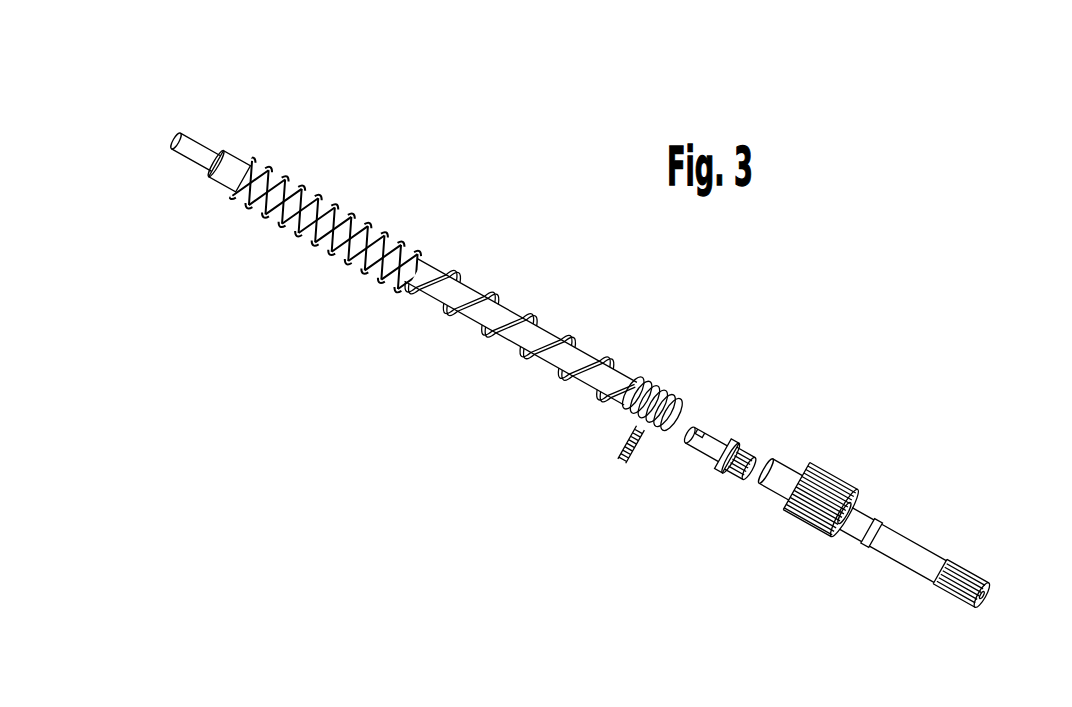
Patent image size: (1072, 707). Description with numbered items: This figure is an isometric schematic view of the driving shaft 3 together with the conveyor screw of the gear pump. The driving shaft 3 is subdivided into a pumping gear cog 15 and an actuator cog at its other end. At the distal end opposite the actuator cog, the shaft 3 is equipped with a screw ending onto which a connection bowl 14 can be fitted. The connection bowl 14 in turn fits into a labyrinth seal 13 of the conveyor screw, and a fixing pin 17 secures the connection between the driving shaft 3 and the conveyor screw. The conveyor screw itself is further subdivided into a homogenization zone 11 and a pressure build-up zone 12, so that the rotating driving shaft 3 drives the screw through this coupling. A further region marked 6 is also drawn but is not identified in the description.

The driving shaft 3 is at (1035, 504).
The flexible shaft 6 is at (718, 326).
The homogenization zone 11 is at (386, 302).
The pressure build-up zone 12 is at (383, 303).
The labyrinth seal 13 is at (672, 427).
The connection bowl 14 is at (744, 432).
The pumping gear cog 15 is at (811, 516).
The fixing pin 17 is at (626, 462).